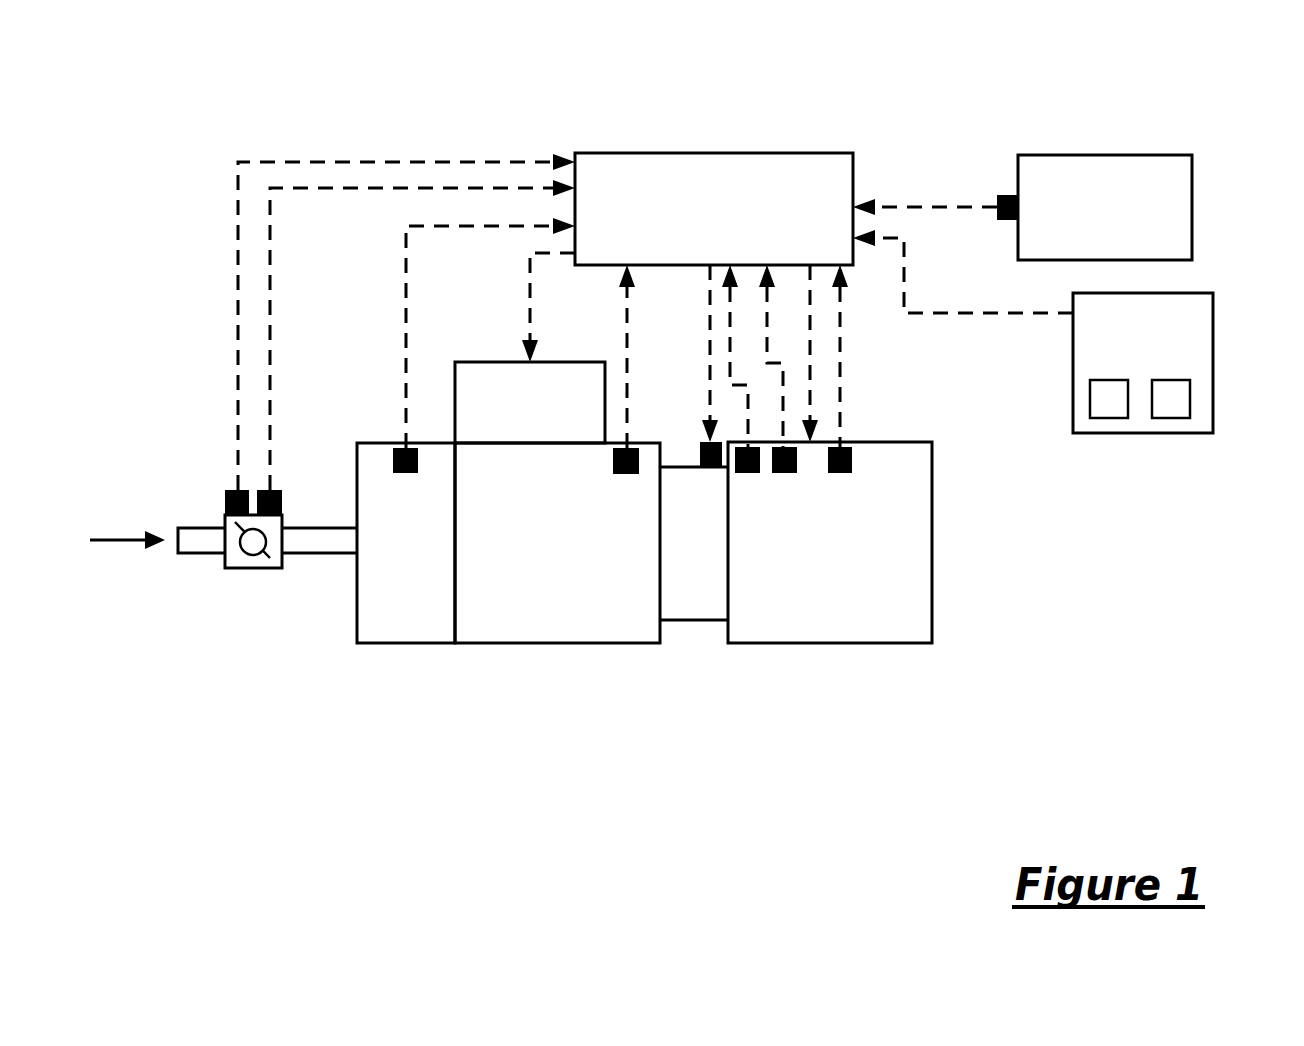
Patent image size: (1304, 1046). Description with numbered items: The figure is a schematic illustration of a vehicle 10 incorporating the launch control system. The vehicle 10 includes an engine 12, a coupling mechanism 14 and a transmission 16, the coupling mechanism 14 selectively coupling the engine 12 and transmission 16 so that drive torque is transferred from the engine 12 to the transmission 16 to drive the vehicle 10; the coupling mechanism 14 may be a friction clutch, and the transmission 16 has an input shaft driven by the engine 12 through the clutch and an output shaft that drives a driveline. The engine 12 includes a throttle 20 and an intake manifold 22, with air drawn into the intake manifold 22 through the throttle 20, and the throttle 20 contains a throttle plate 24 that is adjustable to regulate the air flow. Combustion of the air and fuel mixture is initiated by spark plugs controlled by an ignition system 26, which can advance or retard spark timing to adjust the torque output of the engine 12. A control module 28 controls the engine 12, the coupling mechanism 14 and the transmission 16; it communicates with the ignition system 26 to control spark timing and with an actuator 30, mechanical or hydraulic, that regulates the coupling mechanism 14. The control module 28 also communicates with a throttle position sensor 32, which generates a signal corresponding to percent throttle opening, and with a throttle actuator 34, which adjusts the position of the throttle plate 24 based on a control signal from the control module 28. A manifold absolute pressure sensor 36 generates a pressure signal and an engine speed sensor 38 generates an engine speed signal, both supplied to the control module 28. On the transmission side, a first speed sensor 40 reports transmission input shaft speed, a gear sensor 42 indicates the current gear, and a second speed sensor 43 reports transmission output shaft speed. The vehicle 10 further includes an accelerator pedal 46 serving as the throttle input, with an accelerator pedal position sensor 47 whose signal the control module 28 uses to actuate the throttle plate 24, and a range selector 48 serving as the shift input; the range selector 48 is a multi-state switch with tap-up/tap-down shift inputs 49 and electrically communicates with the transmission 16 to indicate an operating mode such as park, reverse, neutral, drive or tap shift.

The vehicle 10 is at (118, 185).
The engine 12 is at (528, 645).
The coupling mechanism 14 is at (717, 622).
The transmission 16 is at (893, 646).
The throttle 20 is at (222, 570).
The intake manifold 22 is at (397, 644).
The throttle plate 24 is at (262, 562).
The ignition system 26 is at (507, 362).
The control module 28 is at (683, 151).
The actuator 30 is at (713, 468).
The throttle position sensor 32 is at (280, 497).
The throttle actuator 34 is at (223, 497).
The intake manifold absolute pressure sensor 36 is at (398, 448).
The engine speed sensor 38 is at (613, 458).
The first speed sensor 40 is at (740, 475).
The gear sensor 42 is at (775, 475).
The second speed sensor 43 is at (843, 475).
The accelerator pedal 46 is at (1192, 180).
The accelerator pedal position sensor 47 is at (1003, 193).
The range selector 48 is at (1213, 322).
The tap-up/tap-down shift inputs 49 is at (1118, 418).